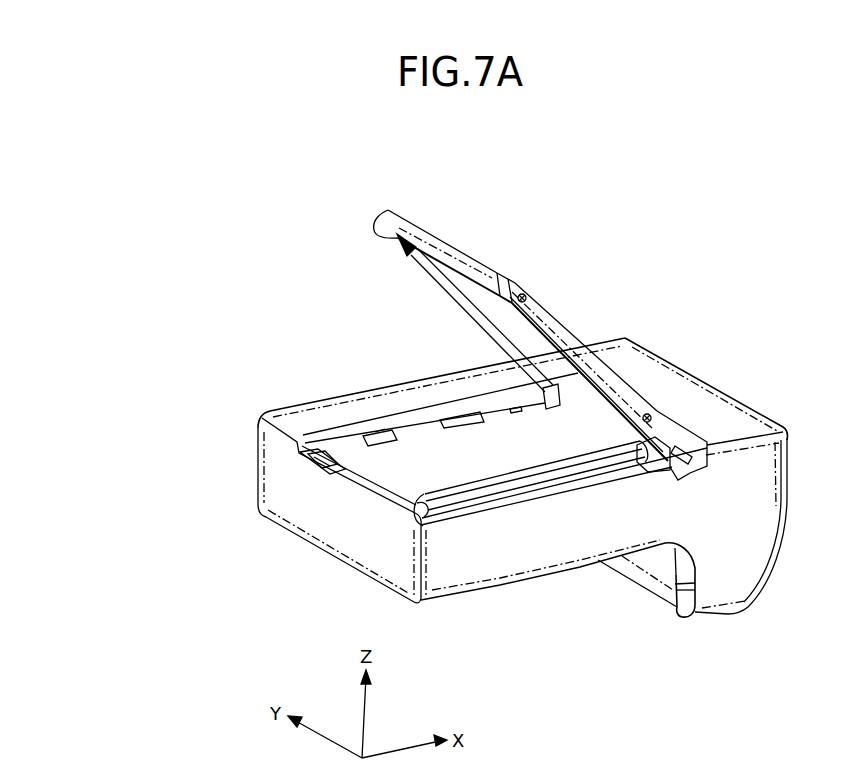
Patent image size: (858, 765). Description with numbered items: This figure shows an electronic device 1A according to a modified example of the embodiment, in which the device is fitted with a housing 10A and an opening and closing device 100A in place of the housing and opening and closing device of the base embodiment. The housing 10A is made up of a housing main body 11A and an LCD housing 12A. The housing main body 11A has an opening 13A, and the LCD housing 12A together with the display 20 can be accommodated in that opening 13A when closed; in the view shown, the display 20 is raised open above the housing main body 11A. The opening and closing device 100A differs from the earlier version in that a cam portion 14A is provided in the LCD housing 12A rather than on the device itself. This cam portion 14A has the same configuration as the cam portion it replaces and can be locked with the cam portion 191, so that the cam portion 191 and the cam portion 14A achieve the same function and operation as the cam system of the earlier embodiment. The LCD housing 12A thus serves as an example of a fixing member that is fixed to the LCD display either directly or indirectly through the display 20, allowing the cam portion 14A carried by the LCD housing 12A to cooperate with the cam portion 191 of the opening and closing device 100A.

The electronic device 1A is at (694, 180).
The housing 10A is at (648, 348).
The housing main body 11A is at (681, 395).
The LCD housing 12A is at (387, 212).
The opening 13A is at (438, 420).
The cam portion 14A is at (389, 238).
The display 20 is at (547, 318).
The opening and closing device 100A is at (400, 471).
The cam portion 191 is at (302, 450).